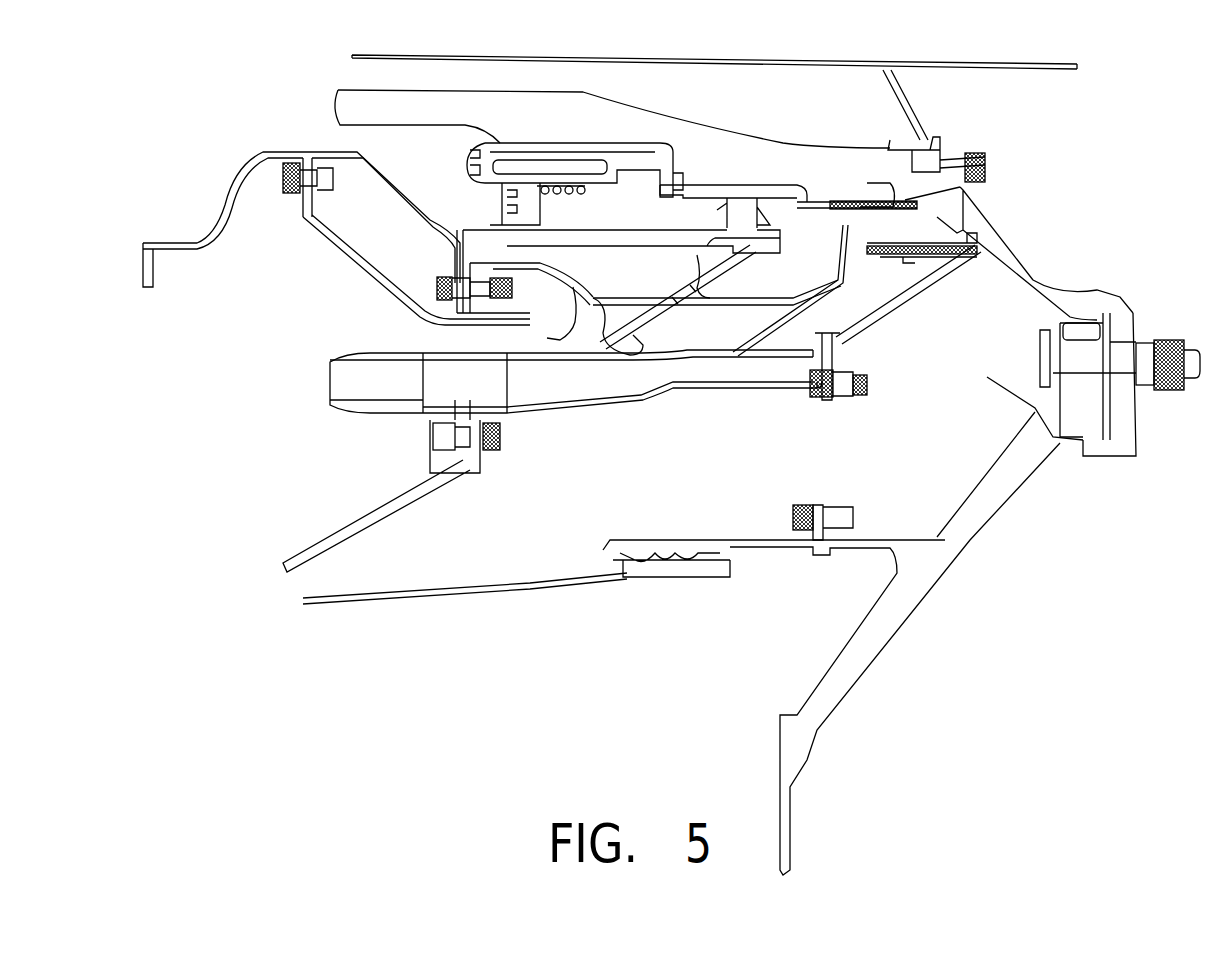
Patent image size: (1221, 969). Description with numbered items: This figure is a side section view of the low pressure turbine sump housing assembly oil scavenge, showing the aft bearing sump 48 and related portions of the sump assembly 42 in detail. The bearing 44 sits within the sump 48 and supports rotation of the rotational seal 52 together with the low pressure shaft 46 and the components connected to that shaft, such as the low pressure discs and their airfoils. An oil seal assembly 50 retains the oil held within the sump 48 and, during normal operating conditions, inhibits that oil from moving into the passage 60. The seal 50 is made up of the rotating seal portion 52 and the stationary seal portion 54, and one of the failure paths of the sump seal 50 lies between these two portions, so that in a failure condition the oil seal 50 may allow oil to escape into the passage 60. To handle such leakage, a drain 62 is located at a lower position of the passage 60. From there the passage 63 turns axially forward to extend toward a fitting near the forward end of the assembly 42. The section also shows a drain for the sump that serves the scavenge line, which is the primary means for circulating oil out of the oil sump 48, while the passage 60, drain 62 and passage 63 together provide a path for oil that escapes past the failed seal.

The sump assembly 42 is at (690, 435).
The bearing 44 is at (760, 175).
The low pressure shaft 46 is at (965, 532).
The aft bearing sump 48 is at (688, 198).
The oil seal assembly 50 is at (927, 190).
The rotating seal portion 52 is at (943, 151).
The stationary seal portion 54 is at (858, 213).
The passage 60 is at (862, 298).
The drain 62 is at (812, 330).
The passage 63 is at (768, 378).